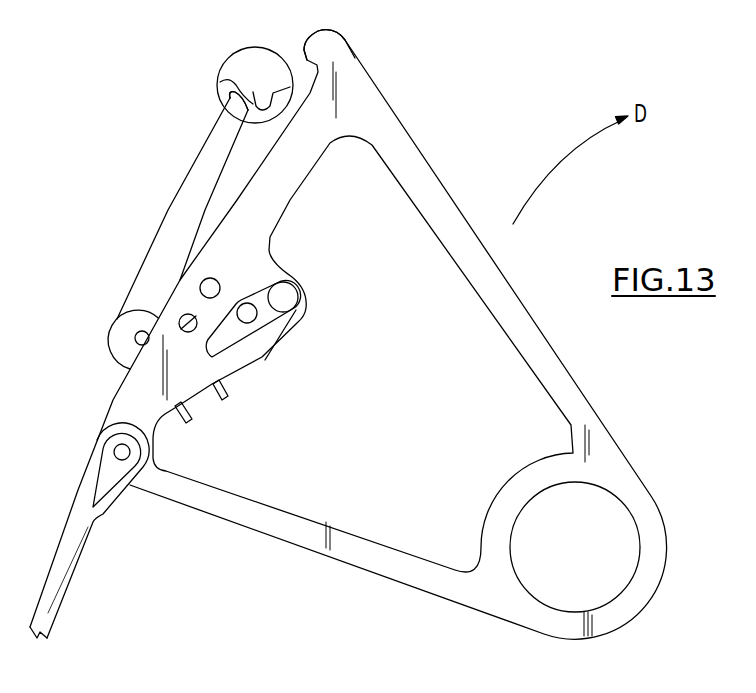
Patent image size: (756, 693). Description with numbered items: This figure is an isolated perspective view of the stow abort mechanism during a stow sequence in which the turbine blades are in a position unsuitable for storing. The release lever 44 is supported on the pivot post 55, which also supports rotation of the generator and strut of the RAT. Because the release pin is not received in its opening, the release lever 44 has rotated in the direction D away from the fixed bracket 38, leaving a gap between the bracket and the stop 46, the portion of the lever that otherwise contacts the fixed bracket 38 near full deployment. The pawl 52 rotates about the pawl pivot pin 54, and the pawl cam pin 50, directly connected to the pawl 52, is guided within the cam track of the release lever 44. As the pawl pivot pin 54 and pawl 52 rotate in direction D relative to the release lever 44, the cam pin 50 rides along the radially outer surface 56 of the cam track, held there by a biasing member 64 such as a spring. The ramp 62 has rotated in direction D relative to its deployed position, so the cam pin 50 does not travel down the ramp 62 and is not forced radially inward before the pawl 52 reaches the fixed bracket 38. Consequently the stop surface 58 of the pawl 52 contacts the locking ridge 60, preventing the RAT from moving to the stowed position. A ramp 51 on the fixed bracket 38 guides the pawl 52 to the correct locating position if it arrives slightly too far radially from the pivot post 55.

The fixed bracket 38 is at (230, 57).
The release lever 44 is at (298, 183).
The stop 46 is at (350, 47).
The pawl cam pin 50 is at (250, 325).
The ramp 51 is at (227, 103).
The pawl 52 is at (180, 223).
The pawl pivot pin 54 is at (122, 347).
The pivot post 55 is at (582, 526).
The radially outer surface 56 is at (235, 303).
The stop surface 58 is at (220, 82).
The locking ridge 60 is at (268, 102).
The ramp 62 is at (298, 311).
The biasing member 64 is at (190, 420).